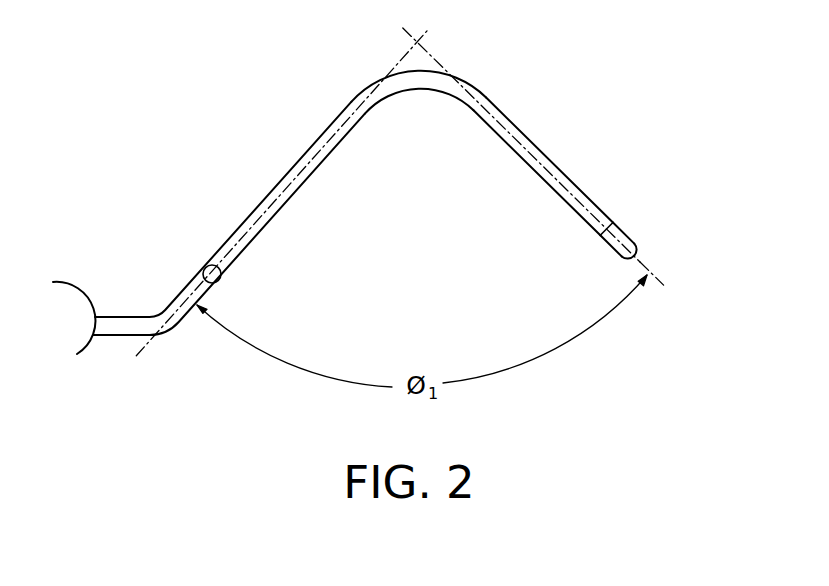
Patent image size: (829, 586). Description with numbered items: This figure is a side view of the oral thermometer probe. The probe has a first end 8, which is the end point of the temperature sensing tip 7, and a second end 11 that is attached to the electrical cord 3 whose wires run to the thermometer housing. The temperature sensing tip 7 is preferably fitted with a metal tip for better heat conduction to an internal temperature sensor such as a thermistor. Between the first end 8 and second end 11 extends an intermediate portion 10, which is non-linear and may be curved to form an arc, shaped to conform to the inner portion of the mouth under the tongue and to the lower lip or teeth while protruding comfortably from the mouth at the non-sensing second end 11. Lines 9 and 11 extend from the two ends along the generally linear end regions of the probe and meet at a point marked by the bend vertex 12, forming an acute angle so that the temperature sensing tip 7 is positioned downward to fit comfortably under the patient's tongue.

The electrical cord 3 is at (134, 322).
The temperature sensing tip 7 is at (630, 244).
The first end 8 is at (636, 260).
The line 9 is at (674, 299).
The intermediate portion 10 is at (423, 70).
The second end 11 is at (246, 222).
The bend vertex 12 is at (404, 60).